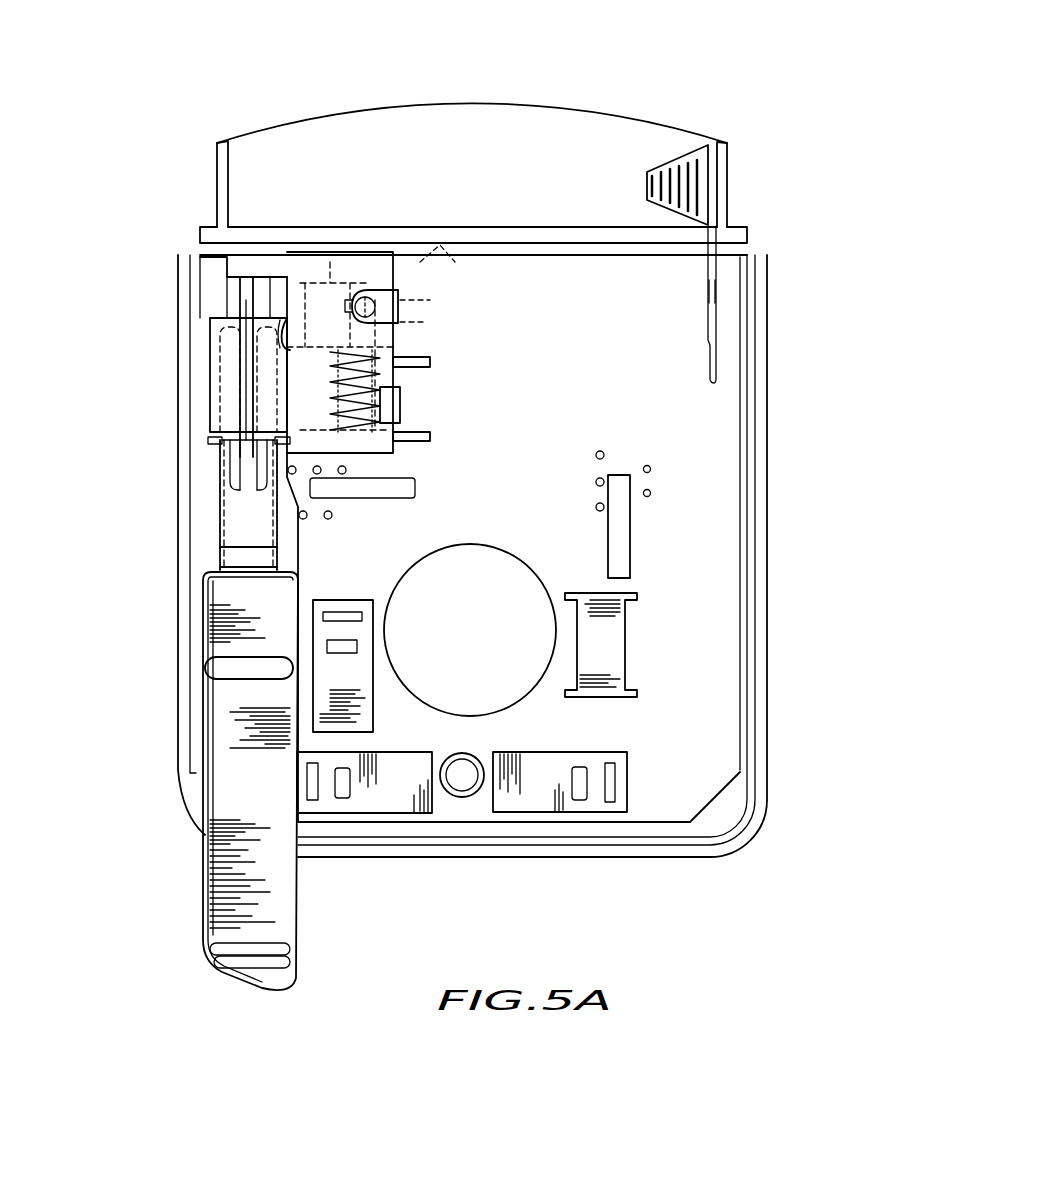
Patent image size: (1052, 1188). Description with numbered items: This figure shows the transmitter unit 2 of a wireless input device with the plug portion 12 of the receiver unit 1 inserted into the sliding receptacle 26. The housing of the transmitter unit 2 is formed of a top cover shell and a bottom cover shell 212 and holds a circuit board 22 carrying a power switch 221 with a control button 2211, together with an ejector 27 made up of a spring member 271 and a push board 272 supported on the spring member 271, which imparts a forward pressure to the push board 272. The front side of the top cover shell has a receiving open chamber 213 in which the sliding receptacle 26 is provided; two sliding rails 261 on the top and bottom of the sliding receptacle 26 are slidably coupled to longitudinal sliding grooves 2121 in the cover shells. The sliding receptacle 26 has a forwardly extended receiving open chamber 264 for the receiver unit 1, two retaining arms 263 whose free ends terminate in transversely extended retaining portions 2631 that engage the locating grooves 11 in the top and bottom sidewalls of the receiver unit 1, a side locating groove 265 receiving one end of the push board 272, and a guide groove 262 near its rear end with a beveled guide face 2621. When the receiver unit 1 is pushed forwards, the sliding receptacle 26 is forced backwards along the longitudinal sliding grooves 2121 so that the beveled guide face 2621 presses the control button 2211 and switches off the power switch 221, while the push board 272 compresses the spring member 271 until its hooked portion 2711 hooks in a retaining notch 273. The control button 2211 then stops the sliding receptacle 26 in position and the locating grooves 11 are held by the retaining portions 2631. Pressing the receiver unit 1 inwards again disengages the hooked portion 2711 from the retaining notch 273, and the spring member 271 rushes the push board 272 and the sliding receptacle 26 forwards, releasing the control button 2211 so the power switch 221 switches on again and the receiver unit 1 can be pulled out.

The receiver unit 1 is at (180, 885).
The transmitter unit 2 is at (752, 845).
The locating grooves 11 is at (215, 674).
The plug portion 12 is at (245, 530).
The circuit board 22 is at (718, 509).
The sliding receptacle 26 is at (195, 347).
The ejector 27 is at (320, 275).
The bottom cover shell 212 is at (750, 306).
The receiving open chamber 213 is at (207, 289).
The power switch 221 is at (402, 410).
The sliding rails 261 is at (250, 428).
The guide groove 262 is at (285, 335).
The retaining arms 263 is at (237, 520).
The receiving open chamber 264 is at (225, 383).
The side locating groove 265 is at (285, 450).
The spring member 271 is at (432, 362).
The push board 272 is at (432, 437).
The retaining notch 273 is at (405, 285).
The longitudinal sliding grooves 2121 is at (250, 283).
The control button 2211 is at (390, 335).
The beveled guide face 2621 is at (272, 305).
The retaining portion 2631 is at (220, 558).
The hooked portion 2711 is at (410, 262).